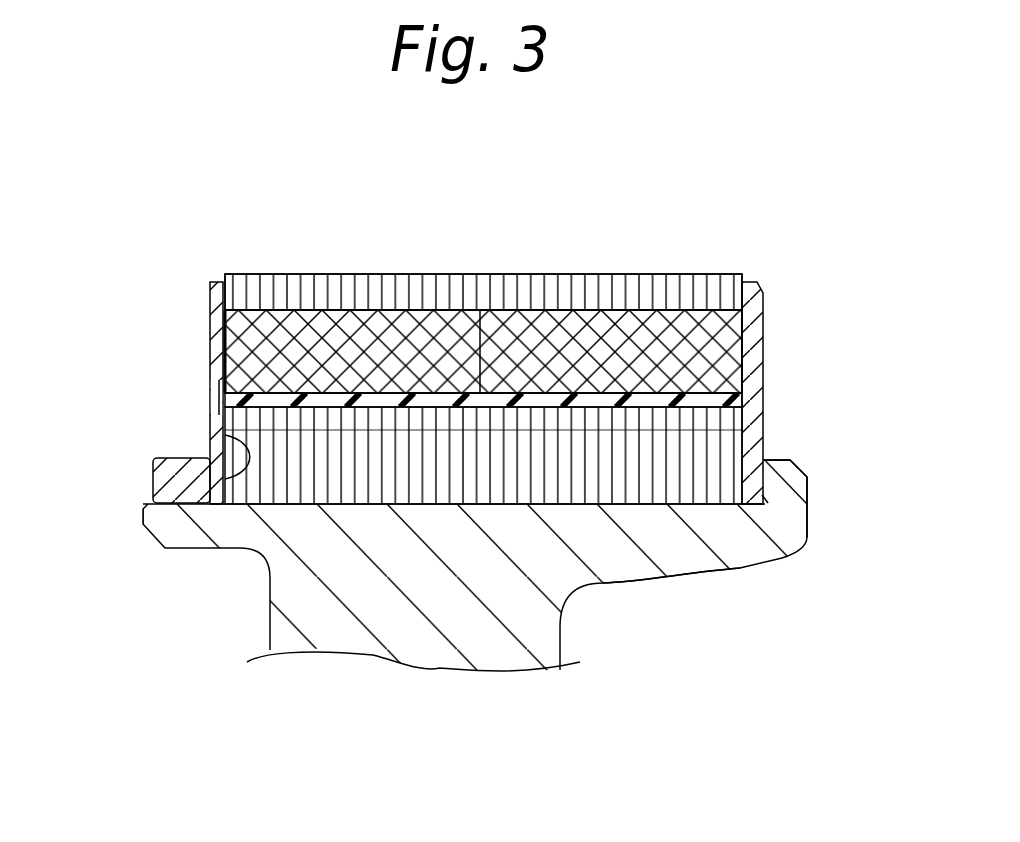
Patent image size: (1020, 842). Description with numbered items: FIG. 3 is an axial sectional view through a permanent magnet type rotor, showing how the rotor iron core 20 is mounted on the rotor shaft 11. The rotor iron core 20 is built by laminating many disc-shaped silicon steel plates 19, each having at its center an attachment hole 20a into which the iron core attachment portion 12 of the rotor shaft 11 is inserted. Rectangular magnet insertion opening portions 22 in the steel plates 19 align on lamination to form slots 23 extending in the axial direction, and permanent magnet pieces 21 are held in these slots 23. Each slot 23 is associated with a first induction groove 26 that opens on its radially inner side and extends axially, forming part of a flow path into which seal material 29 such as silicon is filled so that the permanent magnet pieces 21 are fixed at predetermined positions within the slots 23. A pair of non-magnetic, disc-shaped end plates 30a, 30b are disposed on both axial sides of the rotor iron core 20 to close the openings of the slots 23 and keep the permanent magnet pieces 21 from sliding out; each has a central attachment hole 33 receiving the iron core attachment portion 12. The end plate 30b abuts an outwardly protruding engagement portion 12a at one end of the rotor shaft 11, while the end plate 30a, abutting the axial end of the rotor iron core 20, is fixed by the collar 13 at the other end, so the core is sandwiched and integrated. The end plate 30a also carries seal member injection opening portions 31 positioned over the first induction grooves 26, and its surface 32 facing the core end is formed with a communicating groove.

The rotor shaft 11 is at (613, 560).
The iron core attachment portion 12 is at (232, 527).
The engagement portion 12a is at (783, 473).
The collar 13 is at (182, 479).
The silicon steel plate 19 is at (483, 292).
The rotor iron core 20 is at (588, 295).
The attachment hole 20a is at (690, 582).
The permanent magnet piece 21 is at (718, 367).
The magnet insertion opening portion 22 is at (483, 351).
The slot 23 is at (460, 312).
The first induction groove 26 is at (446, 410).
The seal material 29 is at (312, 393).
The end plate 30a is at (212, 316).
The end plate 30b is at (752, 322).
The seal member injection opening portion 31 is at (212, 393).
The surface 32 is at (210, 435).
The attachment hole 33 is at (213, 506).